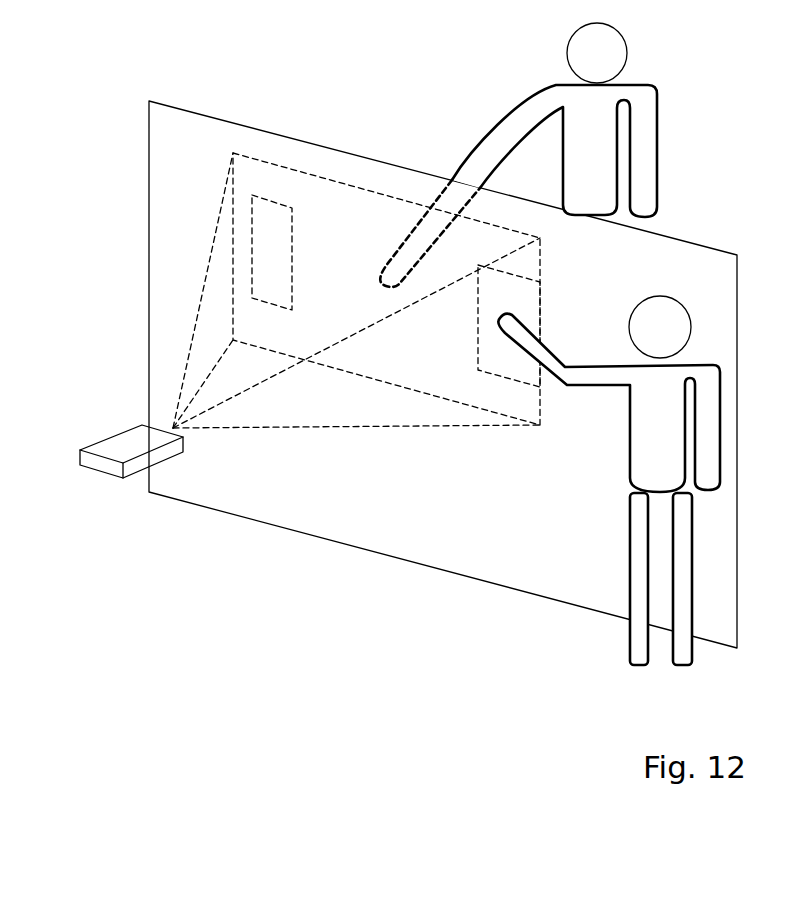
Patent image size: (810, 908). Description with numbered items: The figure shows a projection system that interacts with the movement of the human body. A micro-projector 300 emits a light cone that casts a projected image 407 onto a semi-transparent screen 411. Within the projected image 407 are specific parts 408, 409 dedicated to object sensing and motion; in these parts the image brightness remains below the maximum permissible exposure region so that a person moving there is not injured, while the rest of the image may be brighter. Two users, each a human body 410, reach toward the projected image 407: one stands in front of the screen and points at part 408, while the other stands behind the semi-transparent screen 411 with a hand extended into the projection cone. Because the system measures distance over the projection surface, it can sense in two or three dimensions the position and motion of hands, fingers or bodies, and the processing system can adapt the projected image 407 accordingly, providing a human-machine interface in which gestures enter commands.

The micro-projector 300 is at (127, 438).
The projected image 407 is at (353, 208).
The specific part of the projected image 408 is at (523, 307).
The specific part of the projected image 409 is at (268, 215).
The human body 410 is at (533, 93).
The semi-transparent screen 411 is at (187, 123).